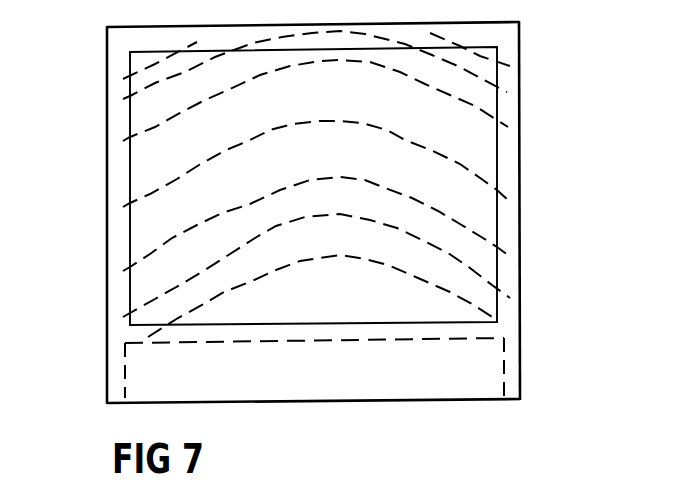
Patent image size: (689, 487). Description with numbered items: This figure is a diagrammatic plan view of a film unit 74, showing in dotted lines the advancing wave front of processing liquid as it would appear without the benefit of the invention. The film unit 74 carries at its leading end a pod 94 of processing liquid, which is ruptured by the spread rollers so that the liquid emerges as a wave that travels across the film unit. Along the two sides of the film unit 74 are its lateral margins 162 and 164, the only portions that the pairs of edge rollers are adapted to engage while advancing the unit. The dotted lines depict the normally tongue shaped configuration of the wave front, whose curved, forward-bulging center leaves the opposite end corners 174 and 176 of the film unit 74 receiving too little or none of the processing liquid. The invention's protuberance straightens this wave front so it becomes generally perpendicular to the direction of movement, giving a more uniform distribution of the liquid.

The film unit 74 is at (557, 178).
The pod 94 is at (360, 378).
The lateral margin 162 is at (108, 167).
The lateral margin 164 is at (519, 238).
The end corner 174 is at (131, 63).
The end corner 176 is at (497, 55).